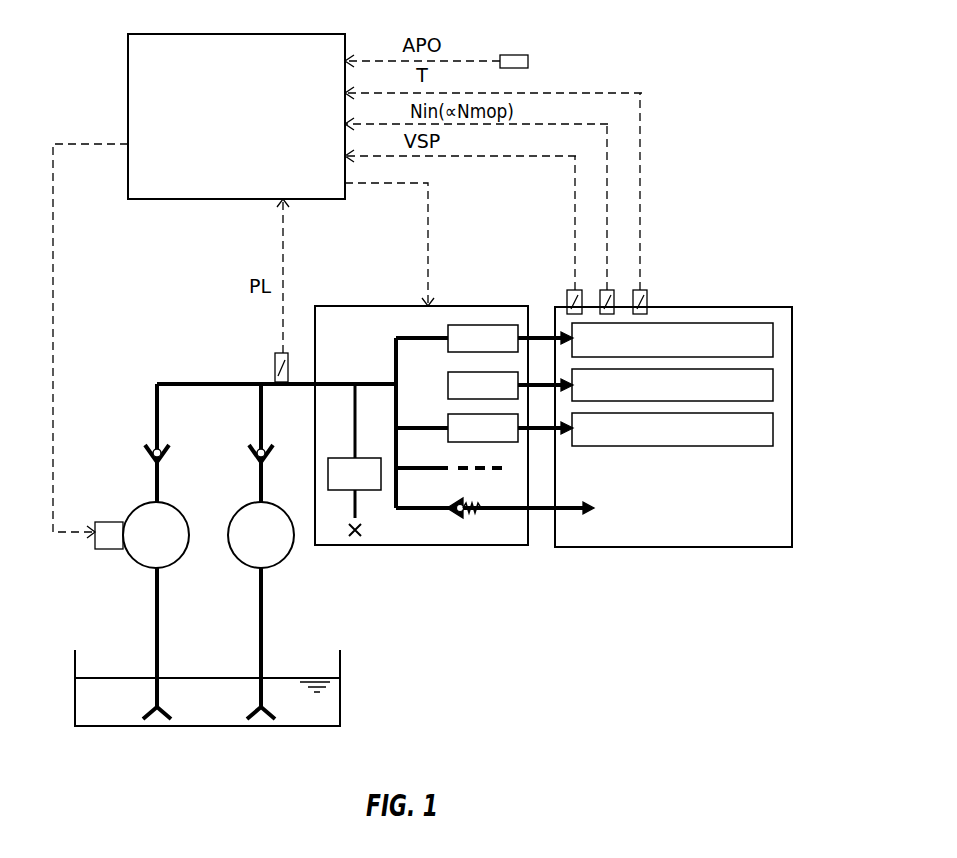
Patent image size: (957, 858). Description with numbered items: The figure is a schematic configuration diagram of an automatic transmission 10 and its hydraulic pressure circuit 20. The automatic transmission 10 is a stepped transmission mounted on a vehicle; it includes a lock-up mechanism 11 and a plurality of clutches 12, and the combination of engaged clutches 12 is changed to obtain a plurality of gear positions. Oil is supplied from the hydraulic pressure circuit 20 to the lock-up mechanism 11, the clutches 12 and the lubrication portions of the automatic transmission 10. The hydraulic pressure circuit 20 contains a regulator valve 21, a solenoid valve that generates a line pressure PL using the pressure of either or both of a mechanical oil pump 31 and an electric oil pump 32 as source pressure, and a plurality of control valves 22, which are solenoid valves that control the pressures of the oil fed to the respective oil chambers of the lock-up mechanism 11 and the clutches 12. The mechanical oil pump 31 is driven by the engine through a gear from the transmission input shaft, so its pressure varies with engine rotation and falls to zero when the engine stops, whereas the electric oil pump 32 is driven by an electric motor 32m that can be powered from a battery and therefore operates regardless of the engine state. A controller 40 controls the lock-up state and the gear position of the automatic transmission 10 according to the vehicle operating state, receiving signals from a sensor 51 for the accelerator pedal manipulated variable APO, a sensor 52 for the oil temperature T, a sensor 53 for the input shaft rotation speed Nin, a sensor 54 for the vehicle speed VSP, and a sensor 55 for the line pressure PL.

The automatic transmission 10 is at (760, 541).
The lock-up mechanism 11 is at (773, 338).
The clutches 12 is at (768, 430).
The hydraulic pressure circuit 20 is at (500, 538).
The regulator valve 21 is at (330, 460).
The control valves 22 is at (500, 325).
The mechanical oil pump 31 is at (240, 520).
The electric oil pump 32 is at (133, 518).
The electric motor 32m is at (108, 549).
The controller 40 is at (158, 40).
The sensor 51 is at (528, 62).
The sensor 52 is at (641, 296).
The sensor 53 is at (608, 300).
The sensor 54 is at (567, 296).
The sensor 55 is at (275, 366).